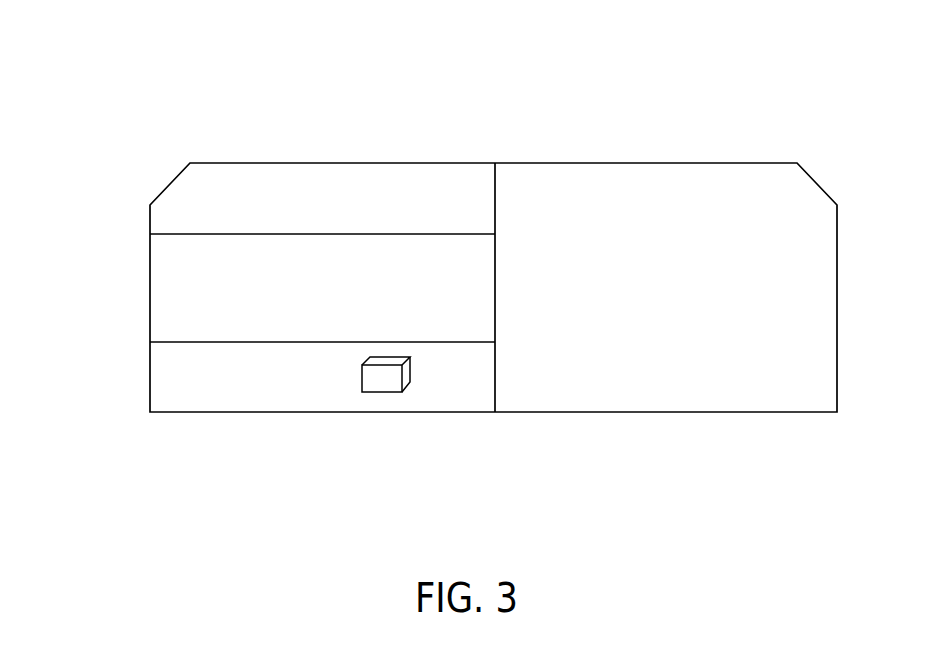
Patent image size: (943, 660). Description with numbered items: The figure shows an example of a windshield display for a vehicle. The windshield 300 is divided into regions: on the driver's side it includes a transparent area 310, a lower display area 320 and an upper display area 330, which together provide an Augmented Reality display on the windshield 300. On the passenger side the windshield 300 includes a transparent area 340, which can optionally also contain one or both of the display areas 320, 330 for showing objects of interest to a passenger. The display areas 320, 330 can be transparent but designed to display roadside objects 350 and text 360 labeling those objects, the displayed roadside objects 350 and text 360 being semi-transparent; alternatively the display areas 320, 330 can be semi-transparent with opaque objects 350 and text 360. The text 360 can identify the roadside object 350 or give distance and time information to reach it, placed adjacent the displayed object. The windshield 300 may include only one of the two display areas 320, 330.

The windshield 300 is at (489, 111).
The transparent area 310 is at (183, 282).
The lower display area 320 is at (185, 377).
The upper display area 330 is at (245, 199).
The transparent area 340 is at (637, 378).
The roadside object 350 is at (408, 378).
The text 360 is at (333, 388).